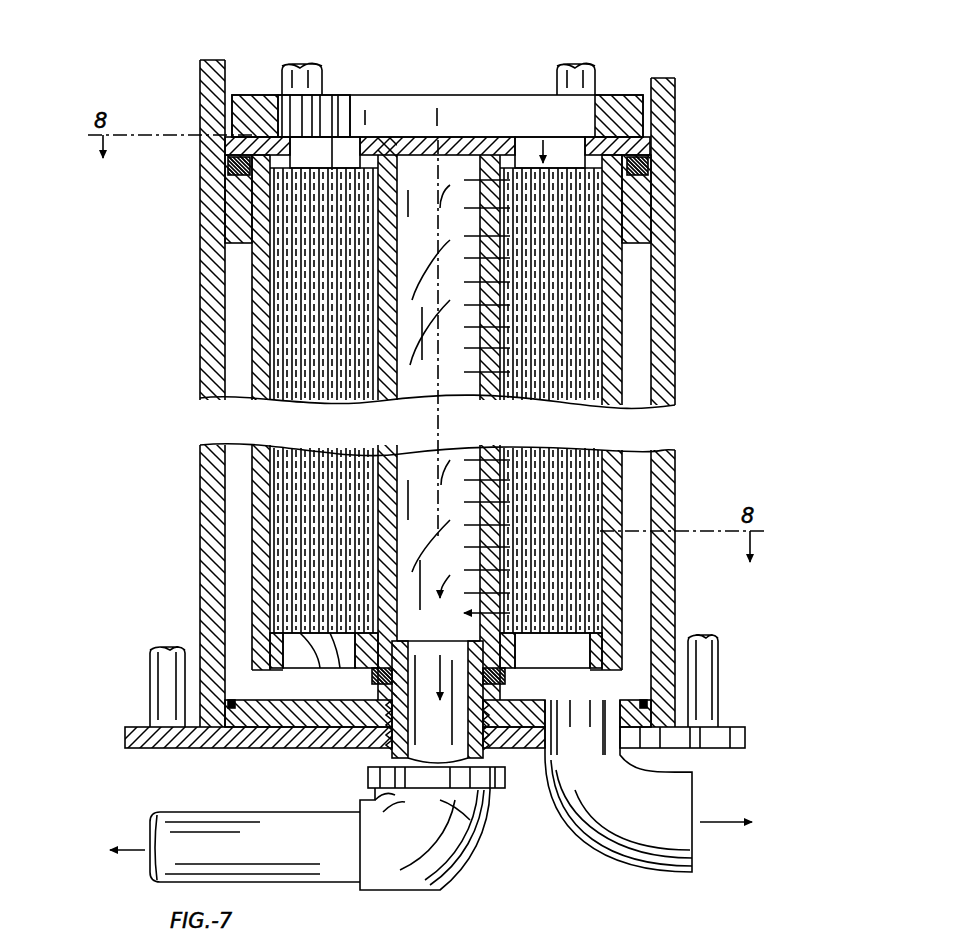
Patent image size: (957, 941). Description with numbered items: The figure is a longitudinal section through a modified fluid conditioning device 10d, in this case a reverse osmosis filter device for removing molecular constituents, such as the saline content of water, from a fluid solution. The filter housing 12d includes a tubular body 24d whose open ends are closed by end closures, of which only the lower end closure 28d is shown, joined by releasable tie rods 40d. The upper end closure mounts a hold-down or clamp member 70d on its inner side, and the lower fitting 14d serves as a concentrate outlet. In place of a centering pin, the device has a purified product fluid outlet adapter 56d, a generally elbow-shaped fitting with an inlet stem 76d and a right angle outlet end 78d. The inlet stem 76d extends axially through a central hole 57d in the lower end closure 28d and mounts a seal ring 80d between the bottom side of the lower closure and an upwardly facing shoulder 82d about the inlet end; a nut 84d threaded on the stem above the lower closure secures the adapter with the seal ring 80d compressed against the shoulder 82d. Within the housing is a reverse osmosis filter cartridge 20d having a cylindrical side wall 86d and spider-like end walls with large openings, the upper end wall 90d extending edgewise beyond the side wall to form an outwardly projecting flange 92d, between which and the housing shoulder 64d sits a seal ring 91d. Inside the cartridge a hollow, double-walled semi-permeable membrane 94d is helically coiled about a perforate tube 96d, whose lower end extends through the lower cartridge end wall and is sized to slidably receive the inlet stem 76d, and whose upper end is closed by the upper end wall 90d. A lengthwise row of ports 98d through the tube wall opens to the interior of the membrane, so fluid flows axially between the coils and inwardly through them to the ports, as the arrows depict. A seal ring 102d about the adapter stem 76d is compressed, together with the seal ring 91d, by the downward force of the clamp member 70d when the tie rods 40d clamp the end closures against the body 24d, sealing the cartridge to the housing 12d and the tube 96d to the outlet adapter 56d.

The fluid conditioning device 10d is at (450, 368).
The filter housing 12d is at (676, 300).
The lower fitting 14d is at (660, 872).
The reverse osmosis filter cartridge 20d is at (249, 312).
The tubular body 24d is at (205, 63).
The lower end closure 28d is at (128, 748).
The tie rods 40d is at (150, 676).
The purified product fluid outlet adapter 56d is at (478, 790).
The central hole 57d is at (392, 790).
The housing shoulder 64d is at (237, 216).
The hold-down or clamp member 70d is at (258, 95).
The inlet stem 76d is at (450, 622).
The right angle outlet end 78d is at (262, 812).
The seal ring 80d is at (384, 755).
The shoulder 82d is at (370, 779).
The nut 84d is at (498, 765).
The cylindrical side wall 86d is at (262, 356).
The upper end wall 90d is at (452, 140).
The seal ring 91d is at (645, 167).
The flange 92d is at (647, 150).
The semi-permeable membrane 94d is at (595, 455).
The perforate tube 96d is at (385, 540).
The ports 98d is at (480, 330).
The seal ring 102d is at (520, 680).